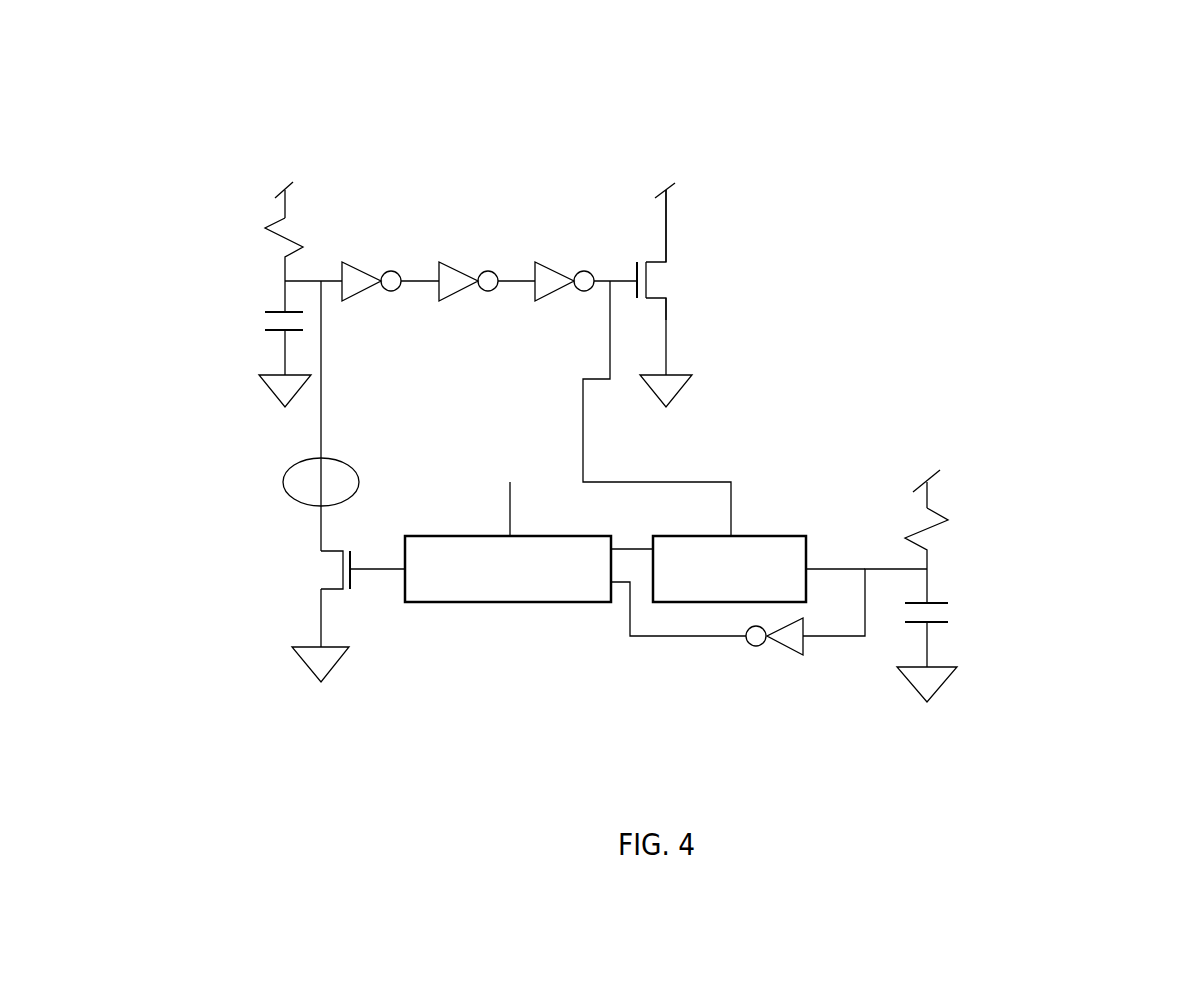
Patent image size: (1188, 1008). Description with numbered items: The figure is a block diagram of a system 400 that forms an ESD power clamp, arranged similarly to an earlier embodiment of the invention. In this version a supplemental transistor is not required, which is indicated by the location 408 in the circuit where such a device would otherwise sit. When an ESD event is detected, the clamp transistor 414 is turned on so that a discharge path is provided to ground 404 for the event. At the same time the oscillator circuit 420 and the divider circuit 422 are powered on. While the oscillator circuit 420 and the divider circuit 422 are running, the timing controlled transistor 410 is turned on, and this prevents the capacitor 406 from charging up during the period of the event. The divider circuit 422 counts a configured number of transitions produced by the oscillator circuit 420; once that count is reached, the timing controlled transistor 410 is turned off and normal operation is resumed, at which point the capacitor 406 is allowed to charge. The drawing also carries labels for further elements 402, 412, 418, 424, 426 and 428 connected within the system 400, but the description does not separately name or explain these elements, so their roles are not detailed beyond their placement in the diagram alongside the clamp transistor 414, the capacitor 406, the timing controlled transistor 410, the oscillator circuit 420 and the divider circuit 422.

The system 400 is at (887, 158).
The resistor 402 is at (257, 227).
The ground 404 is at (259, 390).
The capacitor 406 is at (259, 322).
The location 408 is at (283, 495).
The timing controlled transistor 410 is at (300, 580).
The inverter chain 412 is at (490, 243).
The clamp transistor 414 is at (680, 278).
The supply voltage 418 is at (604, 323).
The oscillator circuit 420 is at (753, 525).
The divider circuit 422 is at (527, 613).
The inverter 424 is at (760, 656).
The resistor 426 is at (977, 535).
The capacitor 428 is at (980, 619).